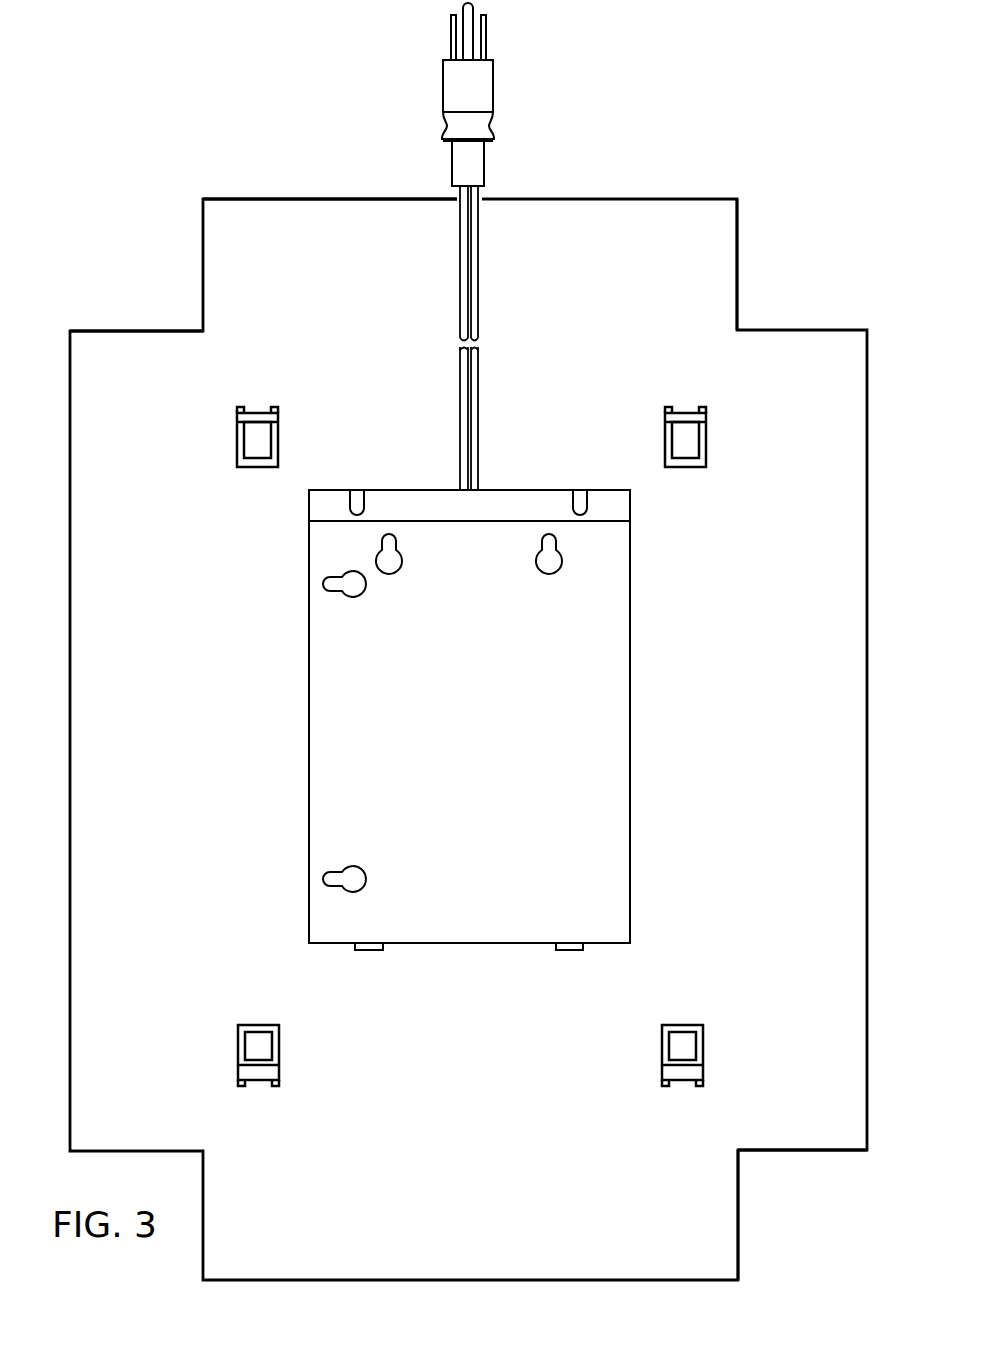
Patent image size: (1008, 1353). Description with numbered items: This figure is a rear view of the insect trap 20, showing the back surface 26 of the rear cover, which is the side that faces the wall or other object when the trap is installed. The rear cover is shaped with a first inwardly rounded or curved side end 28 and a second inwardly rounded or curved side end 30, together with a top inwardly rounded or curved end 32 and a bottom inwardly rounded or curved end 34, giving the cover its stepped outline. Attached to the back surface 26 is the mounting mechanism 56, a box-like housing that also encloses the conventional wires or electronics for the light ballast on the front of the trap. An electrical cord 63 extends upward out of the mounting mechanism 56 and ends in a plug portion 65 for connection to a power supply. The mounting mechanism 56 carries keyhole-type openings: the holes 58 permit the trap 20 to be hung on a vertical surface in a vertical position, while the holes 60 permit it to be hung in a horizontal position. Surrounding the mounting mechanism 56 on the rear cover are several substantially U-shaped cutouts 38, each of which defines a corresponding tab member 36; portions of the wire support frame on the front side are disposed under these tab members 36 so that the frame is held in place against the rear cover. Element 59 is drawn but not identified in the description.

The insect trap 20 is at (721, 158).
The back surface 26 is at (385, 422).
The first inwardly rounded or curved side end 28 is at (770, 1120).
The second inwardly rounded or curved side end 30 is at (108, 343).
The top inwardly rounded or curved end 32 is at (703, 262).
The bottom inwardly rounded or curved end 34 is at (718, 1247).
The tab members 36 is at (256, 436).
The cutouts 38 is at (274, 437).
The mounting mechanism 56 is at (636, 707).
The holes 58 is at (542, 573).
The side keyhole apertures 59 is at (355, 597).
The holes 60 is at (253, 410).
The electrical cord 63 is at (482, 383).
The plug portion 65 is at (492, 122).